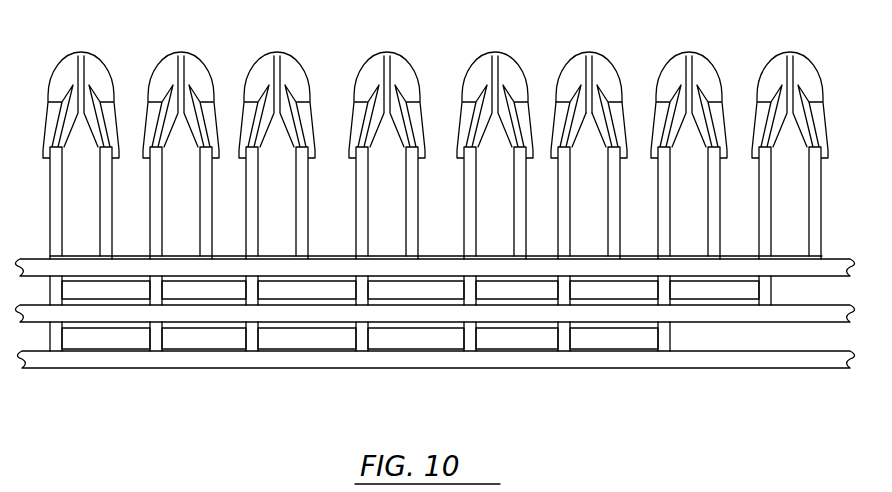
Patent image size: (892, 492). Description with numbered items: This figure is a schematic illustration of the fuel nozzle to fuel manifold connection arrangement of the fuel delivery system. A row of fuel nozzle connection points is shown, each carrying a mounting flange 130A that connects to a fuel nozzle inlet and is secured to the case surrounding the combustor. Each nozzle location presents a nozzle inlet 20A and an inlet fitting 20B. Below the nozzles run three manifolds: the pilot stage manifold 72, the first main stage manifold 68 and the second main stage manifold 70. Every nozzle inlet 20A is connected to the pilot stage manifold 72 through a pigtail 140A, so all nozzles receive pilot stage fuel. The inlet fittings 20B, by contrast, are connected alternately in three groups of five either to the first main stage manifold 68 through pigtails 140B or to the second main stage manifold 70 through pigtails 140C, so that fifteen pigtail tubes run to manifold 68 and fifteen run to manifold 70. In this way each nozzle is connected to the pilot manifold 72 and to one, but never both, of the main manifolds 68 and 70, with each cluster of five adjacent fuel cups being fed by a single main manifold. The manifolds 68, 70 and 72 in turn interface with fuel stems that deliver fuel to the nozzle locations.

The pilot stage manifold 72 is at (327, 268).
The first main stage manifold 68 is at (711, 313).
The second main stage manifold 70 is at (248, 362).
The pigtail 140A is at (212, 226).
The pigtail 140B is at (478, 236).
The pigtail 140C is at (155, 226).
The mounting flange 130A is at (589, 75).
The nozzle inlet 20A is at (617, 128).
The inlet fitting 20B is at (548, 122).